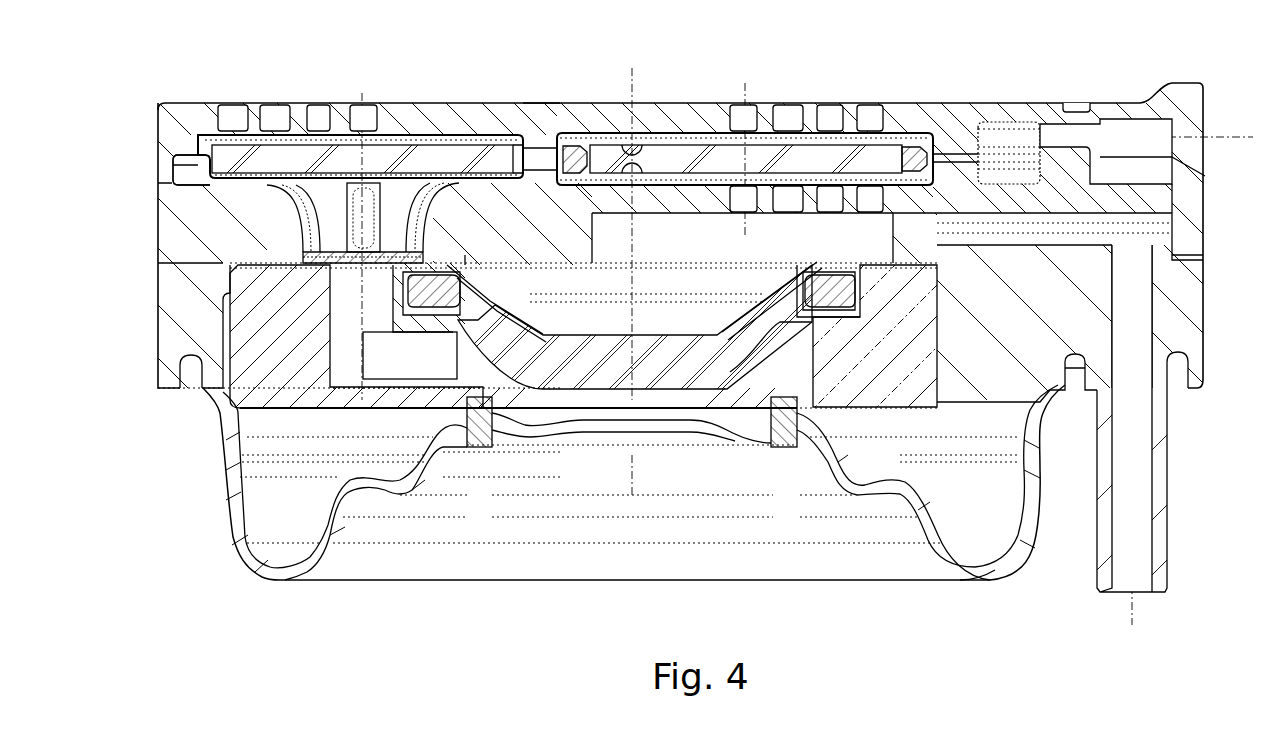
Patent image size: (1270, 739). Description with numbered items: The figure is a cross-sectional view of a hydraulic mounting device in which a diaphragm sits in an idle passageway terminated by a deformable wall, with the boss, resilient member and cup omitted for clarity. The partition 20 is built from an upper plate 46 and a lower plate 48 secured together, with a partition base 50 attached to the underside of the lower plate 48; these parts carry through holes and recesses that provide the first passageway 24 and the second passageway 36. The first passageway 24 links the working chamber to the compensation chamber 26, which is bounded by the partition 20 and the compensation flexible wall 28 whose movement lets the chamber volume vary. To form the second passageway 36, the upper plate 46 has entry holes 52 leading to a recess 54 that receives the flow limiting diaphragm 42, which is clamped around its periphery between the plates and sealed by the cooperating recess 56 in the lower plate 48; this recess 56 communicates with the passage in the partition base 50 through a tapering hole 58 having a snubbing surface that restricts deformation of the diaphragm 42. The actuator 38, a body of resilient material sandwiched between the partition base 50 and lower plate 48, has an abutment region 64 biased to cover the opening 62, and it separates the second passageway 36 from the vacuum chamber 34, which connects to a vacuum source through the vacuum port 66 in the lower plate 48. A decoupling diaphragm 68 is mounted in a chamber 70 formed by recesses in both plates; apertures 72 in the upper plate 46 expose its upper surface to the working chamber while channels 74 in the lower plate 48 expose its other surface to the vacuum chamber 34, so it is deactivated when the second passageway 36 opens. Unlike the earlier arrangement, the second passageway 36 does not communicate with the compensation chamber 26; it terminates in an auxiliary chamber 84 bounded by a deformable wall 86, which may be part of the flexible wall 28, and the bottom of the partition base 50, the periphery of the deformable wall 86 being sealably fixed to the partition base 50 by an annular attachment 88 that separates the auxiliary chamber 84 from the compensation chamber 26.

The partition 20 is at (940, 100).
The first passageway 24 is at (1143, 127).
The compensation chamber 26 is at (297, 524).
The compensation flexible wall 28 is at (980, 572).
The vacuum chamber 34 is at (672, 329).
The second passageway 36 is at (407, 368).
The actuator 38 is at (735, 348).
The flow limiting diaphragm 42 is at (443, 157).
The upper plate 46 is at (540, 113).
The lower plate 48 is at (183, 317).
The partition base 50 is at (262, 383).
The entry holes 52 is at (273, 115).
The recess 54 is at (203, 128).
The recess 56 is at (212, 182).
The tapering hole 58 is at (297, 203).
The opening 62 is at (583, 398).
The abutment region 64 is at (670, 368).
The vacuum port 66 is at (1143, 530).
The decoupling diaphragm 68 is at (880, 157).
The chamber 70 is at (670, 130).
The apertures 72 is at (793, 113).
The channels 74 is at (793, 207).
The auxiliary chamber 84 is at (735, 420).
The deformable wall 86 is at (535, 437).
The annular attachment 88 is at (472, 427).